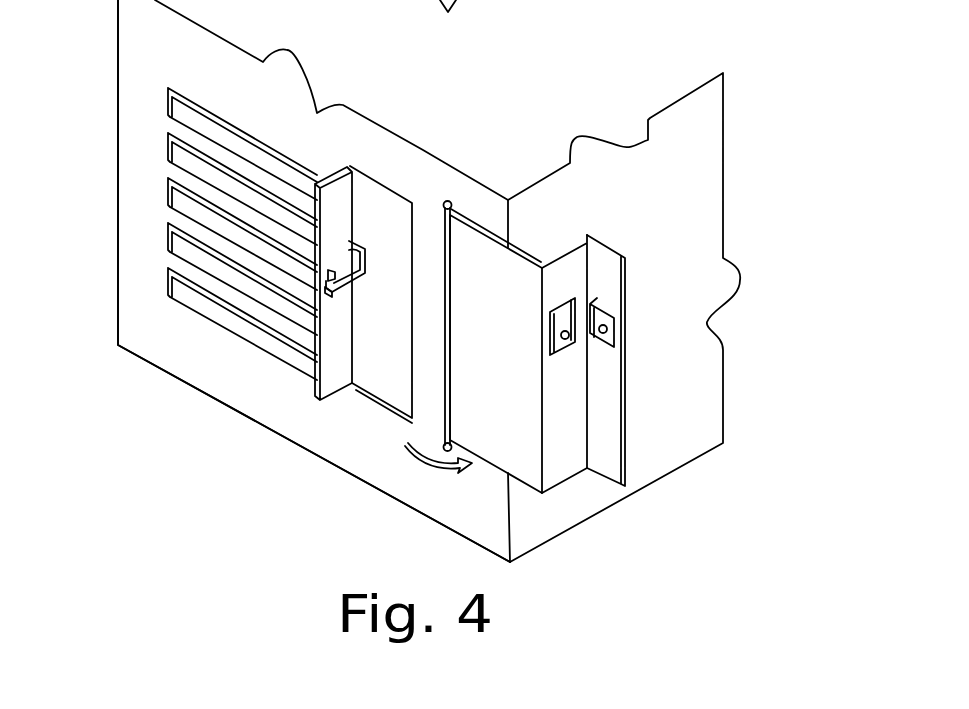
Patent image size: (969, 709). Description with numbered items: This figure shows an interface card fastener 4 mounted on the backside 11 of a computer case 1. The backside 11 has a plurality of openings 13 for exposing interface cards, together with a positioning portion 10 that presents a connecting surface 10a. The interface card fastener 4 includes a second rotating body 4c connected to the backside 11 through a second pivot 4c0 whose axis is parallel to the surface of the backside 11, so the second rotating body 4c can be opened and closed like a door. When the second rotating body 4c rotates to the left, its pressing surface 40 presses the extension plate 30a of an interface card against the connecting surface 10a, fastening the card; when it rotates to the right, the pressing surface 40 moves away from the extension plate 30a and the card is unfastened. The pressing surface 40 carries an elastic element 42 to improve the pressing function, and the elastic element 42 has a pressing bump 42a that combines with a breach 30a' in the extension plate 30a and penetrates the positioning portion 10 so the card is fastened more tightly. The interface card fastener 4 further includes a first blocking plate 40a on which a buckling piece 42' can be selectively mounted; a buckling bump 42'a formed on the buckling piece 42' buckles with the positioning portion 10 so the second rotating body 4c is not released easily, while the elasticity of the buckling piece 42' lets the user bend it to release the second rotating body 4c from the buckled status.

The computer case 1 is at (105, 36).
The backside 11 is at (197, 353).
The openings 13 is at (163, 88).
The positioning portion 10 is at (317, 418).
The connecting surface 10a is at (337, 378).
The extension plate 30a is at (373, 175).
The breach 30a' is at (344, 152).
The second pivot 4c0 is at (443, 278).
The second rotating body 4c is at (509, 369).
The pressing surface 40 is at (563, 273).
The first blocking plate 40a is at (623, 383).
The elastic element 42 is at (588, 275).
The pressing bump 42a is at (565, 340).
The buckling piece 42' is at (642, 290).
The buckling bump 42'a is at (693, 317).
The interface card fastener 4 is at (580, 490).